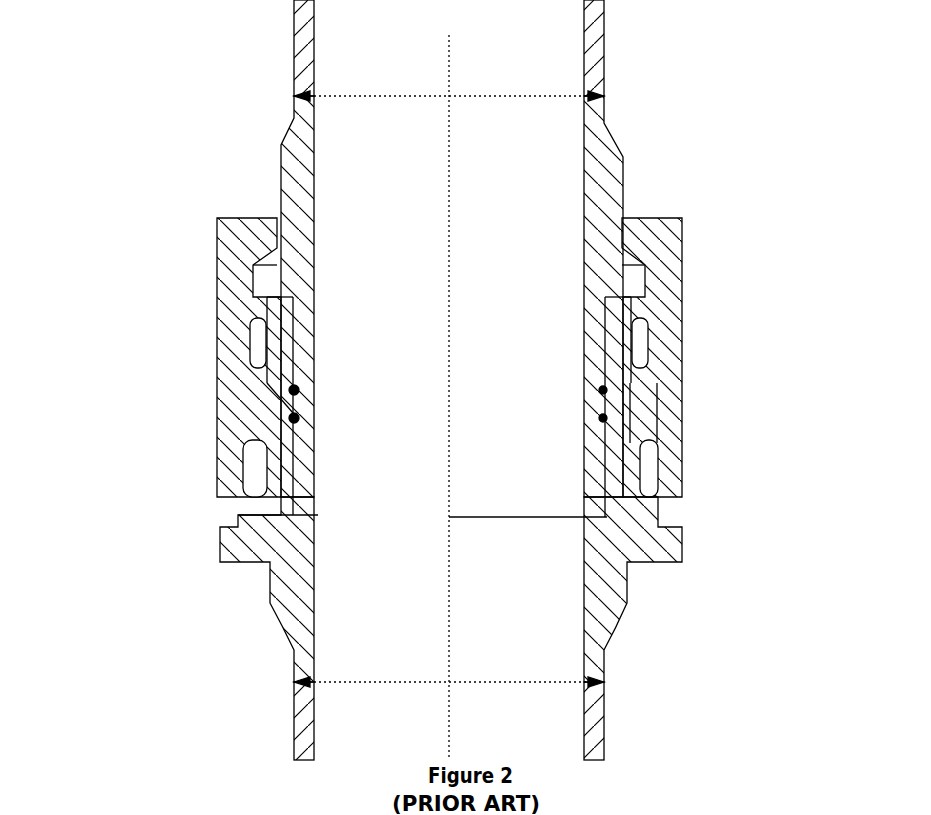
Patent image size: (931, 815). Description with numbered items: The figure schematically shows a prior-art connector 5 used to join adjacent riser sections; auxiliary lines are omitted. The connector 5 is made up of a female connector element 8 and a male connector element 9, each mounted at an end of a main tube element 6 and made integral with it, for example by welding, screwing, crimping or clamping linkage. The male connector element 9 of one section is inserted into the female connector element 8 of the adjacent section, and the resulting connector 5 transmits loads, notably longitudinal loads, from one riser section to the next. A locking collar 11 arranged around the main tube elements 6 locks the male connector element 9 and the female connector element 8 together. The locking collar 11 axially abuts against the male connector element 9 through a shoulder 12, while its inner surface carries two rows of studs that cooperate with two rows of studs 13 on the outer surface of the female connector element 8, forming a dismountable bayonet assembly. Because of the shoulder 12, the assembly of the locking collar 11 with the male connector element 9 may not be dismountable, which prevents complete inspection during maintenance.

The connector 5 is at (108, 384).
The main tube element 6 is at (292, 50).
The female connector element 8 is at (280, 594).
The male connector element 9 is at (294, 187).
The locking collar 11 is at (238, 308).
The shoulder 12 is at (642, 263).
The studs 13 is at (645, 414).